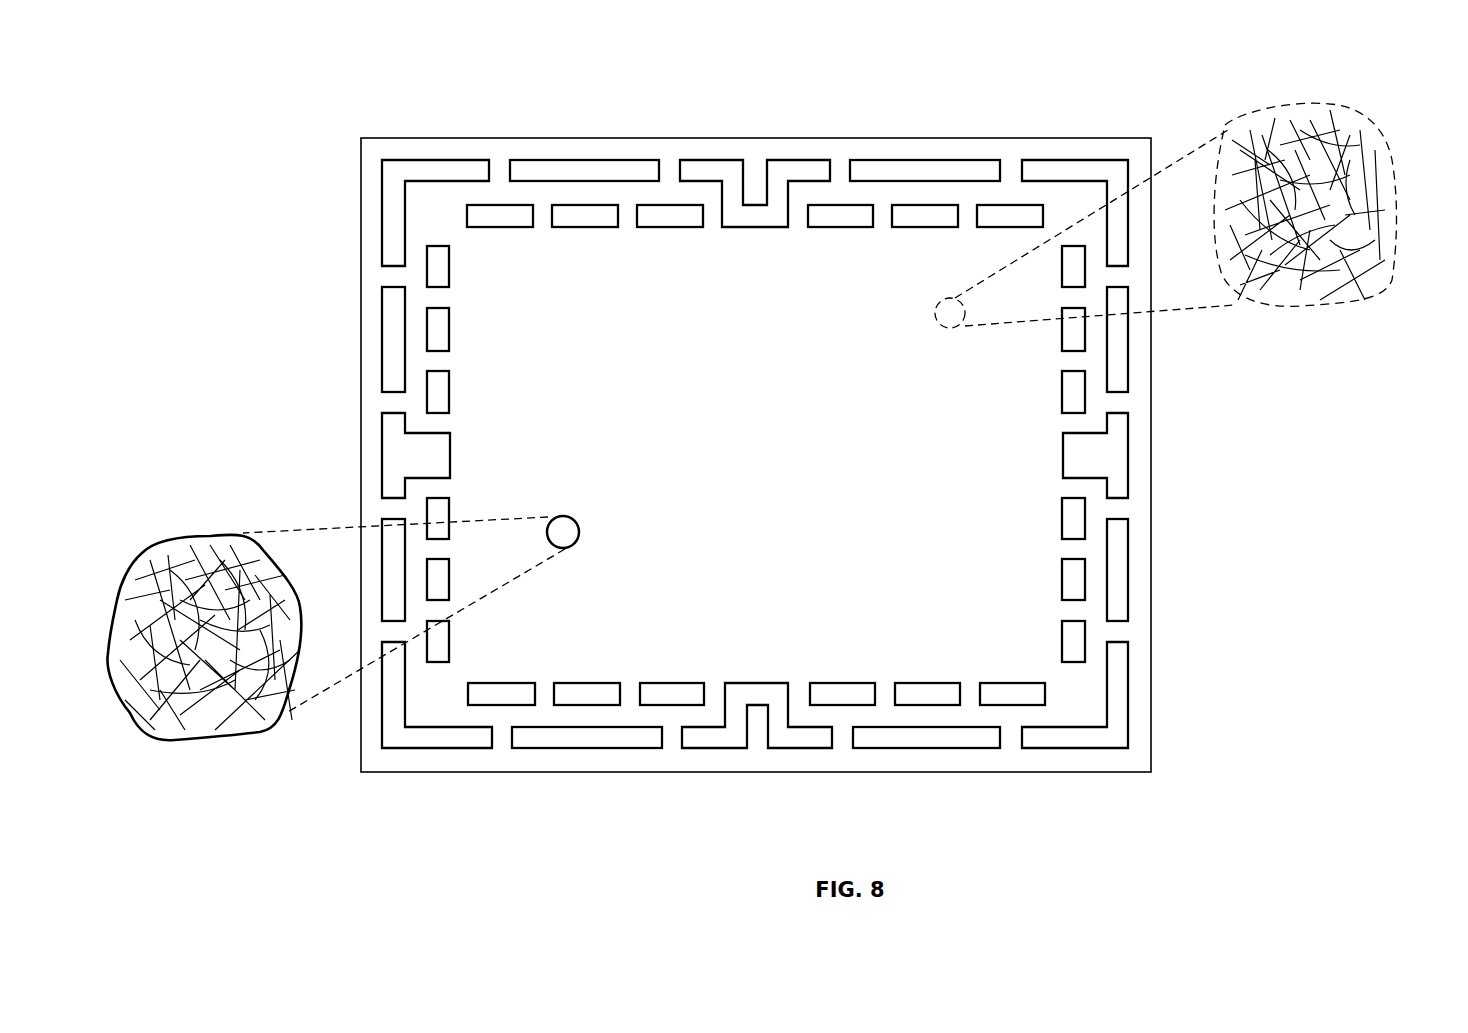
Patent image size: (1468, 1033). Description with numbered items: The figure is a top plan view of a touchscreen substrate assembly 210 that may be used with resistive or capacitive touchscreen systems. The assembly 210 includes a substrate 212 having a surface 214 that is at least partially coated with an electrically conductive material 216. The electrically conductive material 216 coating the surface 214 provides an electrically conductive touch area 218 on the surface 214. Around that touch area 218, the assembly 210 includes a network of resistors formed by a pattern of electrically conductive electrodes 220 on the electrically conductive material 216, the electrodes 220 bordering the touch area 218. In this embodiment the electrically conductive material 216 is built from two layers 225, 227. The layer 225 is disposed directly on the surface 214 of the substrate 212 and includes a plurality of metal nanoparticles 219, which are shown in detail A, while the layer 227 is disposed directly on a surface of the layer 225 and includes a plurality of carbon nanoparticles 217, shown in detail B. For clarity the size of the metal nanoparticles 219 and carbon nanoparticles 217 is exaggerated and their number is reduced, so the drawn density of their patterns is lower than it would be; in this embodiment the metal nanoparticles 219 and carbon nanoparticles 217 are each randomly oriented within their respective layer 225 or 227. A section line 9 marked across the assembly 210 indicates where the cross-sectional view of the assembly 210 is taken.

The touchscreen substrate assembly 210 is at (312, 90).
The substrate 212 is at (1083, 773).
The surface 214 is at (888, 662).
The electrically conductive material 216 is at (1025, 572).
The carbon nanoparticles 217 is at (160, 552).
The electrically conductive touch area 218 is at (789, 268).
The metal nanoparticles 219 is at (1372, 152).
The electrically conductive electrodes 220 is at (448, 166).
The layer 225 is at (723, 662).
The layer 227 is at (572, 662).
The line 9- 9 is at (1223, 422).